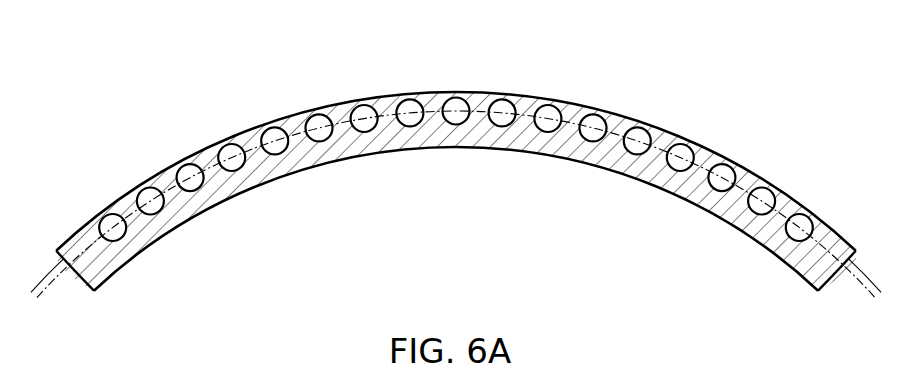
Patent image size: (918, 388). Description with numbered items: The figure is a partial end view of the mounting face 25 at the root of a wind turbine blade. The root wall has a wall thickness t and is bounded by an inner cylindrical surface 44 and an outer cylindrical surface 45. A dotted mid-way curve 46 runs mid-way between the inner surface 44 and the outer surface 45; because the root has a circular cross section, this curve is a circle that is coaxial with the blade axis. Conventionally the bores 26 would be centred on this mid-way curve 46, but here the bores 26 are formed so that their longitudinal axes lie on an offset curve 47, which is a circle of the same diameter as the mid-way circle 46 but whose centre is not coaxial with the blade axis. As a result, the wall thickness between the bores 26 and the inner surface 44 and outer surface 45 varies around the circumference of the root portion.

The mounting face 25 is at (207, 198).
The bores 26 is at (147, 189).
The inner cylindrical surface 44 is at (345, 159).
The outer cylindrical surface 45 is at (382, 92).
The mid-way curve 46 is at (58, 289).
The offset curve 47 is at (62, 279).
The wall thickness t is at (638, 209).